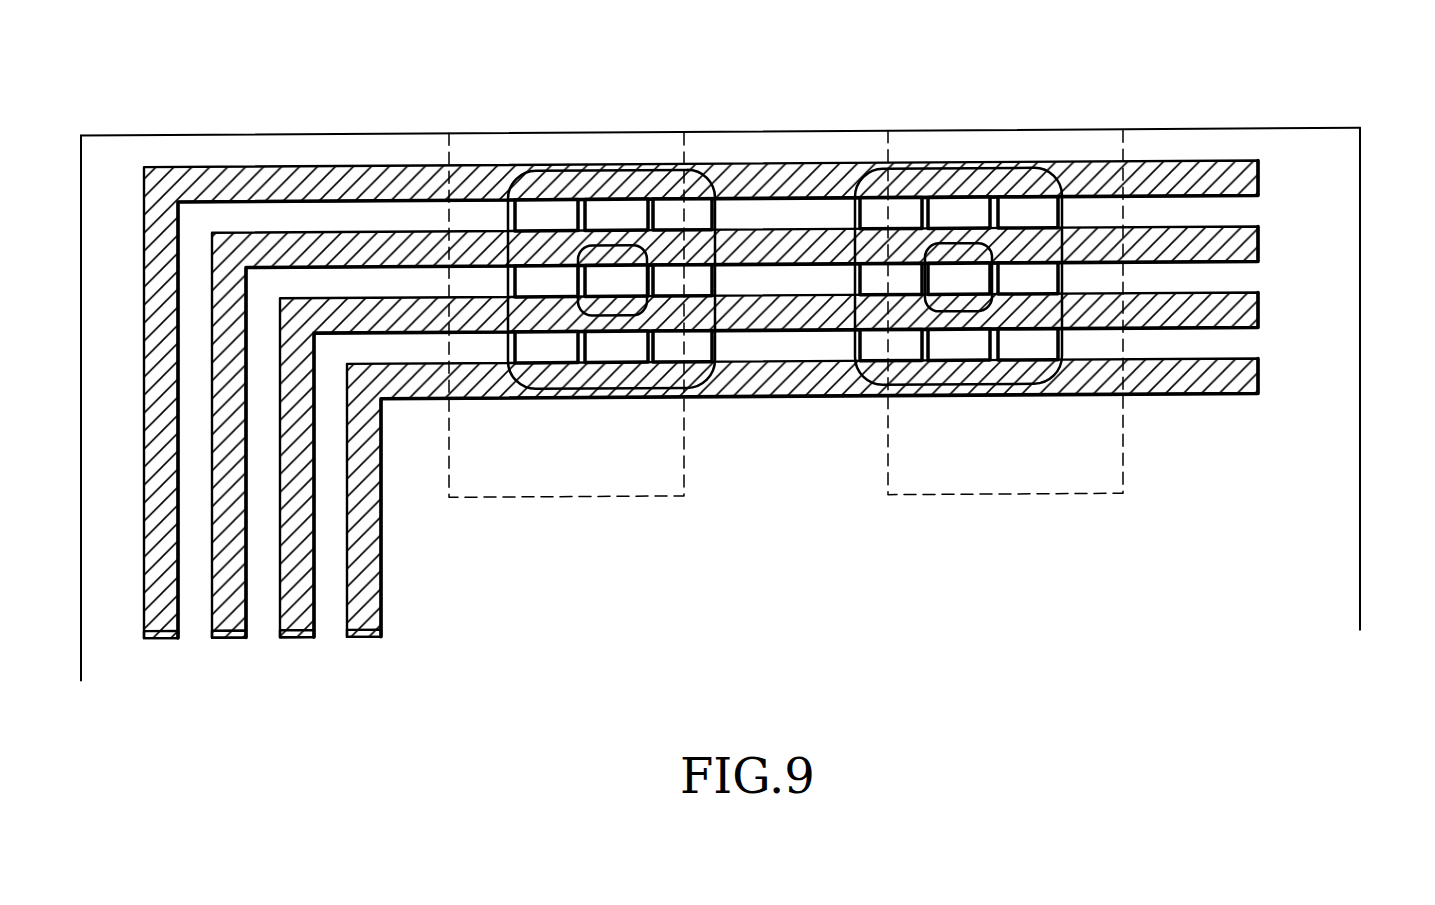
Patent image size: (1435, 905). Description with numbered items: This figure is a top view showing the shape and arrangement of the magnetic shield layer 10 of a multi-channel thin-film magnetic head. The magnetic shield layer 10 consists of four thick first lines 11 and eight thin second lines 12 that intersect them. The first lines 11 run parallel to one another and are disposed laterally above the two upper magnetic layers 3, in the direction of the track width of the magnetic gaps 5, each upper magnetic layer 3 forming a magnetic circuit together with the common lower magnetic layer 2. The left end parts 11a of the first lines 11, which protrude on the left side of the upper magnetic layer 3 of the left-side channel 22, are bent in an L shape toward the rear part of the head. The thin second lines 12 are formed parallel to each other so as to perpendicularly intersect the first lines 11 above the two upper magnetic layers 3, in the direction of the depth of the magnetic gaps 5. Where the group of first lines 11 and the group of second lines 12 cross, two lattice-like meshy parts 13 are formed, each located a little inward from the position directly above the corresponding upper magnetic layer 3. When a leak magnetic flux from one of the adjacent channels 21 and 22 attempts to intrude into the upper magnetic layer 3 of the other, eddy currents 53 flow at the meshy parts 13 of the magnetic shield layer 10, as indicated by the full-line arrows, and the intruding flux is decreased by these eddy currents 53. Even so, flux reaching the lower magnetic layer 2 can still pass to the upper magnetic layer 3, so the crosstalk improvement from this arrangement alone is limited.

The lower magnetic layer 2 is at (1320, 141).
The upper magnetic layer 3 is at (786, 382).
The magnetic gap 5 is at (596, 136).
The magnetic shield layer 10 is at (740, 189).
The first lines 11 is at (782, 336).
The left end parts 11a is at (160, 639).
The second lines 12 is at (722, 349).
The meshy parts 13 is at (628, 201).
The channel 21 is at (967, 468).
The left-side channel 22 is at (522, 465).
The eddy currents 53 is at (578, 260).